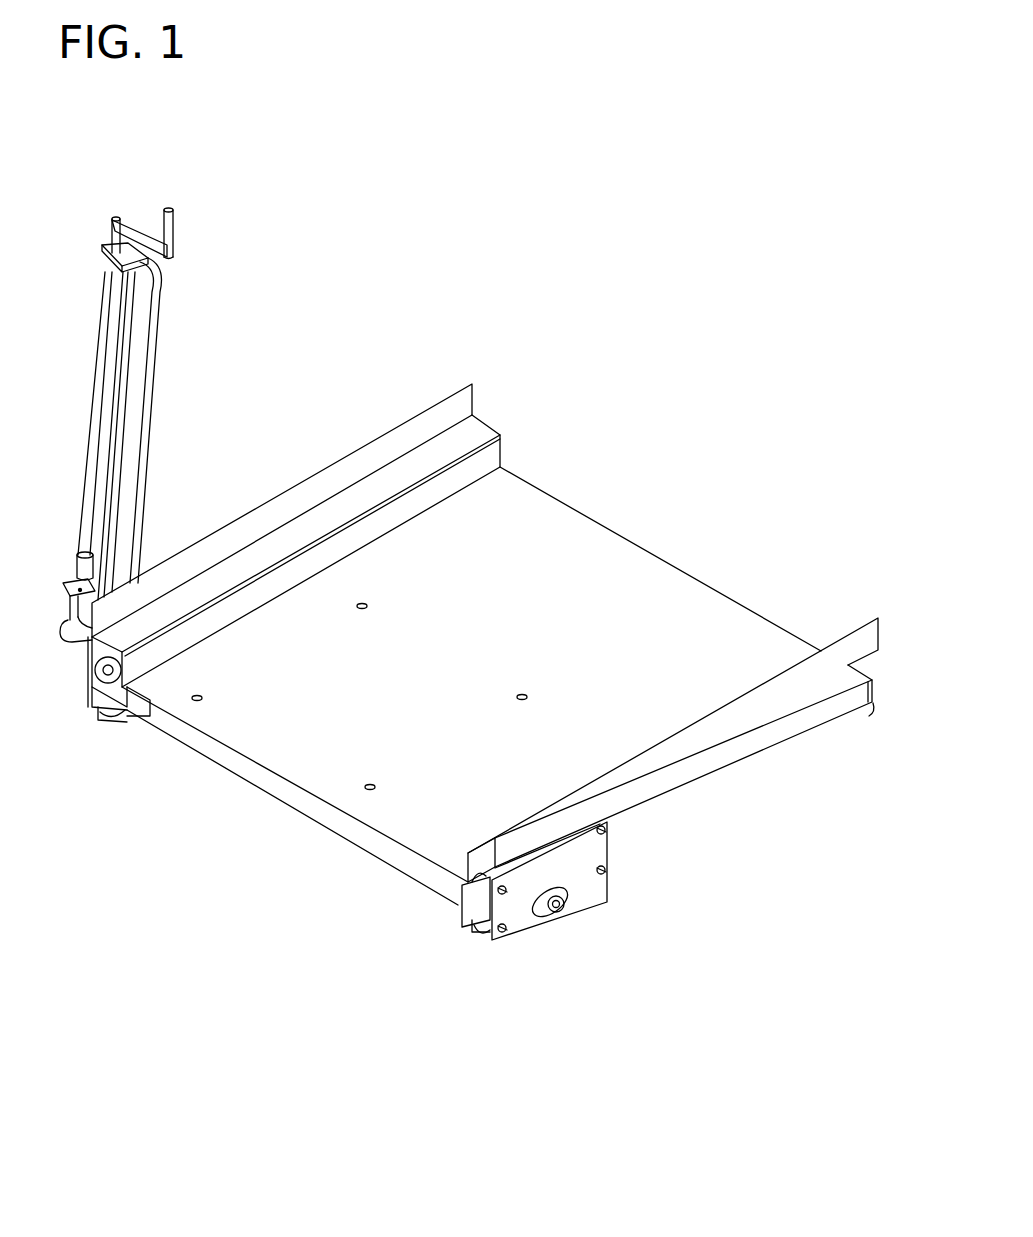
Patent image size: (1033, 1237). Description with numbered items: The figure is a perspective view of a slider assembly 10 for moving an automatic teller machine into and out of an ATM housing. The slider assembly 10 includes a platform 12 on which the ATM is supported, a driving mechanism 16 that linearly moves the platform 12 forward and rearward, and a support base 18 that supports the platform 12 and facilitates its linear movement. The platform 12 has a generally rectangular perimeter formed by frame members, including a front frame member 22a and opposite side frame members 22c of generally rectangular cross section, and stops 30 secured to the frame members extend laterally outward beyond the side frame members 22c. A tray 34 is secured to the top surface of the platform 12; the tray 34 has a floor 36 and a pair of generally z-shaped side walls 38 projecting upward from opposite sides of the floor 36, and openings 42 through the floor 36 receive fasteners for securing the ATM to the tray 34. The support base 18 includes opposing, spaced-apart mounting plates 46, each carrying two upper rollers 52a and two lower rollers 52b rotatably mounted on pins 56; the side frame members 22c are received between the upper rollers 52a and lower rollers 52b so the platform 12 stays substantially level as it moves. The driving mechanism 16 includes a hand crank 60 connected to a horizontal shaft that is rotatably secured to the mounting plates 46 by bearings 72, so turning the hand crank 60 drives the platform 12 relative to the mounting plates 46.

The slider assembly 10 is at (662, 306).
The platform 12 is at (358, 860).
The driving mechanism 16 is at (66, 540).
The support base 18 is at (540, 950).
The front frame member 22a is at (332, 833).
The side frame member 22c is at (797, 730).
The stop 30 is at (870, 705).
The tray 34 is at (672, 565).
The floor 36 is at (547, 528).
The side wall 38 is at (293, 487).
The opening 42 is at (446, 520).
The mounting plate 46 is at (100, 702).
The upper roller 52a is at (153, 718).
The lower roller 52b is at (98, 717).
The pin 56 is at (605, 832).
The hand crank 60 is at (92, 377).
The bearing 72 is at (557, 913).